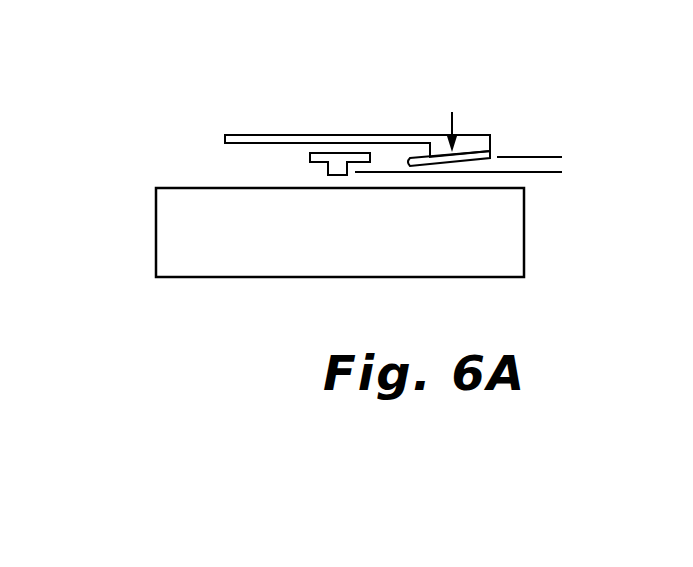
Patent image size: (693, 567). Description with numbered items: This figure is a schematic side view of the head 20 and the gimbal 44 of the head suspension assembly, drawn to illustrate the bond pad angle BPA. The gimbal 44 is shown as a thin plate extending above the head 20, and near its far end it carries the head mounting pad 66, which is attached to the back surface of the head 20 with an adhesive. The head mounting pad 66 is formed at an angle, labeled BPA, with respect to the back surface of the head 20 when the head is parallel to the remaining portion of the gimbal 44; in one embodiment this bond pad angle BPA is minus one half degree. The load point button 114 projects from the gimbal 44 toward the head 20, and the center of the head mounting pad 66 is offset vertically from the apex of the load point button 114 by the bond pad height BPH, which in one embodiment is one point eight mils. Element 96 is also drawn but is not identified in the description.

The gimbal 44 is at (306, 135).
The T-shaped guide 96 is at (318, 153).
The head mounting pad 66 is at (422, 158).
The load point button 114 is at (328, 170).
The head 20 is at (156, 245).
The bond pad height BPH is at (547, 208).
The bond pad angle BPA is at (456, 188).